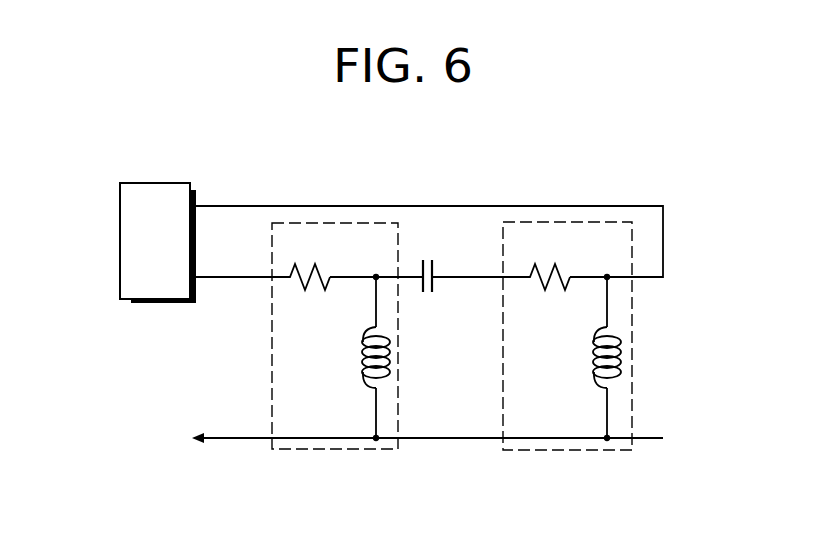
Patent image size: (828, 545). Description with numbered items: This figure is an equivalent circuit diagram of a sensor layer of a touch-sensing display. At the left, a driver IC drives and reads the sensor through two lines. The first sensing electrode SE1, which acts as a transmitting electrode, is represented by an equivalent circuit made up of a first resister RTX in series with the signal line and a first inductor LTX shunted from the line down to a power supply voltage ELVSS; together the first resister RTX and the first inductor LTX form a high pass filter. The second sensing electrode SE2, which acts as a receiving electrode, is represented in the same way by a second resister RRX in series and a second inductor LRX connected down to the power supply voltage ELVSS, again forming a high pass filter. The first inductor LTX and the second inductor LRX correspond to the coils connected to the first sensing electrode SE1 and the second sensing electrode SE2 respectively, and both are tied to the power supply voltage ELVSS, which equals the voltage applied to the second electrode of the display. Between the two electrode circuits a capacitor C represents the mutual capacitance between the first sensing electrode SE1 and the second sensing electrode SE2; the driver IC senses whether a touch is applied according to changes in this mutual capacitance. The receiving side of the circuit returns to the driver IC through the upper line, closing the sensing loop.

The driver IC is at (158, 243).
The first resister RTX is at (307, 261).
The first inductor LTX is at (356, 358).
The mutual capacitance C is at (427, 262).
The second resister RRX is at (547, 261).
The second inductor LRX is at (587, 358).
The first sensing electrode SE1 is at (323, 452).
The second sensing electrode SE2 is at (557, 452).
The power supply voltage ELVSS is at (390, 438).